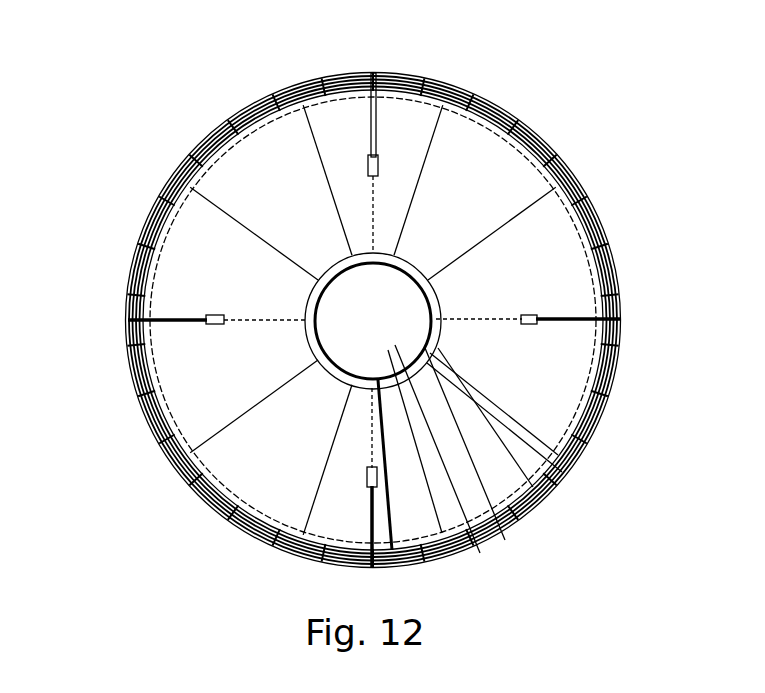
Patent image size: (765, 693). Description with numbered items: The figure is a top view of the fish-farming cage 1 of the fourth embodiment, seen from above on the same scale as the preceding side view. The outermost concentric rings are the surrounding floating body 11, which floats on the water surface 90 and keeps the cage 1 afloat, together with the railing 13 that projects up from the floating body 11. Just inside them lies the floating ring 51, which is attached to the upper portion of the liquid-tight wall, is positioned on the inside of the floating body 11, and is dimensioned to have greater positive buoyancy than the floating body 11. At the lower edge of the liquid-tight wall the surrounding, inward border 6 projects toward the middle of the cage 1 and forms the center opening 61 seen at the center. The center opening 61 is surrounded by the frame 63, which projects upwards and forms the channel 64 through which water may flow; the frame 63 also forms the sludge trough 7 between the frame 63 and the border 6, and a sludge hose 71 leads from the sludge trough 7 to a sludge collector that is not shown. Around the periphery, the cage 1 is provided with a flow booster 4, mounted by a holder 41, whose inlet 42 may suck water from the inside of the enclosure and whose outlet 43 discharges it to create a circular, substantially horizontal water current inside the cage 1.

The cage 1 is at (130, 190).
The floating body 11 is at (128, 266).
The railing 13 is at (130, 312).
The floating ring 51 is at (146, 357).
The outlet 43 is at (597, 392).
The border 6 is at (255, 357).
The water surface 90 is at (392, 333).
The inlet 42 is at (533, 316).
The holder 41 is at (547, 316).
The flow booster 4 is at (567, 316).
The sludge trough 7 is at (576, 445).
The center opening 61 is at (533, 477).
The channel 64 is at (505, 540).
The frame 63 is at (480, 553).
The sludge hose 71 is at (398, 512).